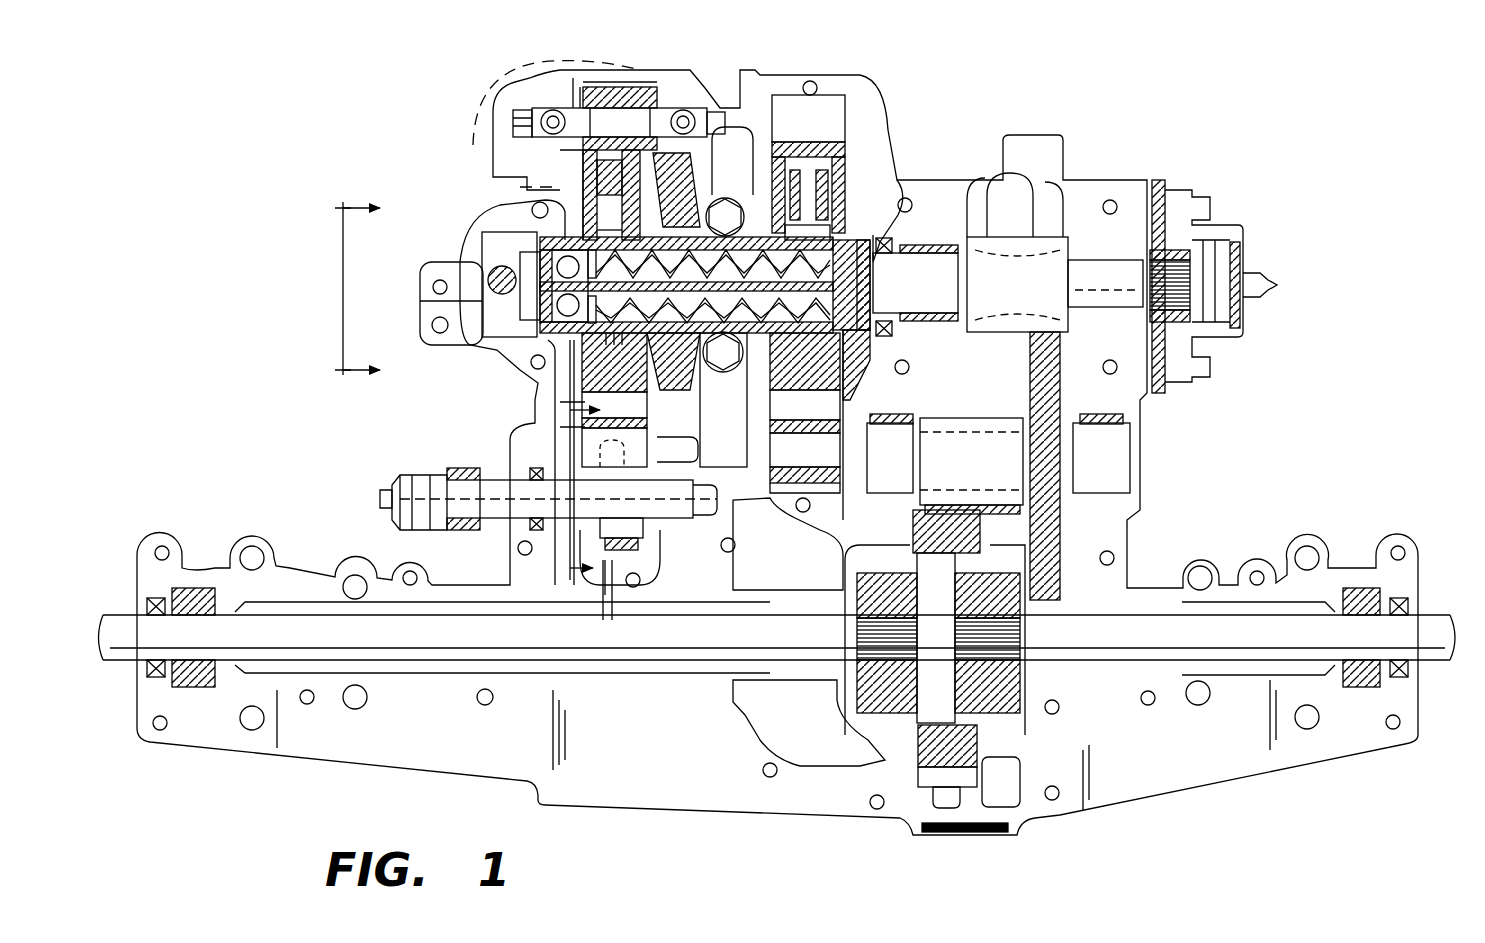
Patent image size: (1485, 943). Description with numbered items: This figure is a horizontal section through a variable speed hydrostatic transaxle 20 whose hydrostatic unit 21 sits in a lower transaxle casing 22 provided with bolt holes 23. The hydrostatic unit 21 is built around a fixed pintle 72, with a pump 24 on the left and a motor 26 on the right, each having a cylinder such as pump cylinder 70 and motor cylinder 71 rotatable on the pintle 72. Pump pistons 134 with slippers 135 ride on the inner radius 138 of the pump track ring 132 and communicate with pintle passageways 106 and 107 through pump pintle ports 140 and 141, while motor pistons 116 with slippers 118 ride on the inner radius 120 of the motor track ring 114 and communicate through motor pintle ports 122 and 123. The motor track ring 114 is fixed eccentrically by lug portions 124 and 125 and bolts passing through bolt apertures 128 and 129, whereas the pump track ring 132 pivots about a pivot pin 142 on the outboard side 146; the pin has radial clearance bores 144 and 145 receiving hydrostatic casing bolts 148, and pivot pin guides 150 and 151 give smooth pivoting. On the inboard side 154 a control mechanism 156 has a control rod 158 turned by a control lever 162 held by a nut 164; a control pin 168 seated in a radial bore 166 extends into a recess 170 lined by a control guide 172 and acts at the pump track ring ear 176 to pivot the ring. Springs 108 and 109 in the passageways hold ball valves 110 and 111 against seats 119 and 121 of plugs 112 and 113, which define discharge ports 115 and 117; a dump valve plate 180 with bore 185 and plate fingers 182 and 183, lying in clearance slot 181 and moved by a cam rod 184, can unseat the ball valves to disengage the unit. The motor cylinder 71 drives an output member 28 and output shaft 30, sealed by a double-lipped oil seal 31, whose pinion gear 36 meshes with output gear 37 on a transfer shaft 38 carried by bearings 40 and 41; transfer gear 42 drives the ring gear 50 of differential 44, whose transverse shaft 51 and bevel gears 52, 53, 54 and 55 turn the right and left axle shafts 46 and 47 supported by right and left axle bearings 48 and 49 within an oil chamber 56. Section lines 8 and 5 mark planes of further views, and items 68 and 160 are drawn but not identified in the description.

The variable speed hydrostatic transaxle 20 is at (1197, 145).
The hydrostatic unit 21 is at (660, 125).
The lower transaxle casing 22 is at (777, 452).
The bolt holes 23 is at (165, 548).
The pump 24 is at (548, 395).
The motor 26 is at (872, 178).
The output member 28 is at (873, 360).
The output shaft 30 is at (910, 305).
The double-lipped oil seal 31 is at (890, 257).
The pinion gear 36 is at (997, 295).
The output gear 37 is at (1033, 380).
The transfer shaft 38 is at (1105, 470).
The bearing 40 is at (1108, 420).
The bearing 41 is at (897, 418).
The transfer gear 42 is at (951, 472).
The differential 44 is at (957, 663).
The right axle shaft 46 is at (1117, 644).
The left axle shaft 47 is at (404, 652).
The right axle bearing 48 is at (1395, 598).
The left axle bearing 49 is at (195, 590).
The ring gear 50 is at (923, 788).
The transverse shaft 51 is at (922, 646).
The bevel gear 52 is at (913, 556).
The bevel gear 53 is at (1020, 705).
The bevel gear 54 is at (995, 733).
The bevel gear 55 is at (852, 620).
The oil chamber 56 is at (785, 587).
The hex bolt 68 is at (725, 199).
The pump cylinder 70 is at (660, 172).
The motor cylinder 71 is at (895, 182).
The pintle 72 is at (723, 399).
The pintle passageway 106 is at (804, 411).
The pintle passageway 107 is at (897, 225).
The spring 108 is at (855, 375).
The spring 109 is at (868, 342).
The ball valve 110 is at (614, 362).
The ball valve 111 is at (618, 345).
The plug 112 is at (505, 355).
The plug 113 is at (505, 190).
The motor track ring 114 is at (862, 95).
The discharge port 115 is at (470, 348).
The motor piston 116 is at (880, 137).
The discharge port 117 is at (545, 200).
The slipper 118 is at (833, 115).
The seat 119 is at (520, 197).
The inner radius 120 is at (807, 167).
The seat 121 is at (540, 372).
The motor pintle port 122 is at (912, 203).
The motor pintle port 123 is at (805, 361).
The lug portion 124 is at (788, 462).
The lug portion 125 is at (845, 100).
The bolt aperture 128 is at (796, 506).
The bolt aperture 129 is at (810, 81).
The pump track ring 132 is at (650, 82).
The pump piston 134 is at (520, 180).
The slipper 135 is at (580, 148).
The inner radius 138 is at (632, 87).
The pump pintle port 140 is at (650, 395).
The pump pintle port 141 is at (730, 161).
The pivot pin 142 is at (690, 100).
The radial clearance bore 144 is at (712, 108).
The radial clearance bore 145 is at (553, 110).
The outboard side 146 is at (470, 73).
The hydrostatic casing bolt 148 is at (671, 123).
The pivot pin guide 150 is at (684, 112).
The pivot pin guide 151 is at (600, 87).
The inboard side 154 is at (506, 533).
The control mechanism 156 is at (688, 535).
The control rod 158 is at (504, 513).
The shaft bearing 160 is at (535, 472).
The control lever 162 is at (478, 470).
The nut 164 is at (383, 505).
The radial bore 166 is at (622, 493).
The control pin 168 is at (645, 540).
The recess 170 is at (650, 553).
The control guide 172 is at (607, 598).
The pump track ring ear 176 is at (698, 452).
The dump valve plate 180 is at (462, 262).
The clearance slot 181 is at (482, 240).
The plate finger 182 is at (432, 325).
The plate finger 183 is at (490, 205).
The cam rod 184 is at (432, 287).
The bore 185 is at (428, 301).
The section line 8- 8 is at (367, 290).
The section line 5- 5 is at (586, 460).